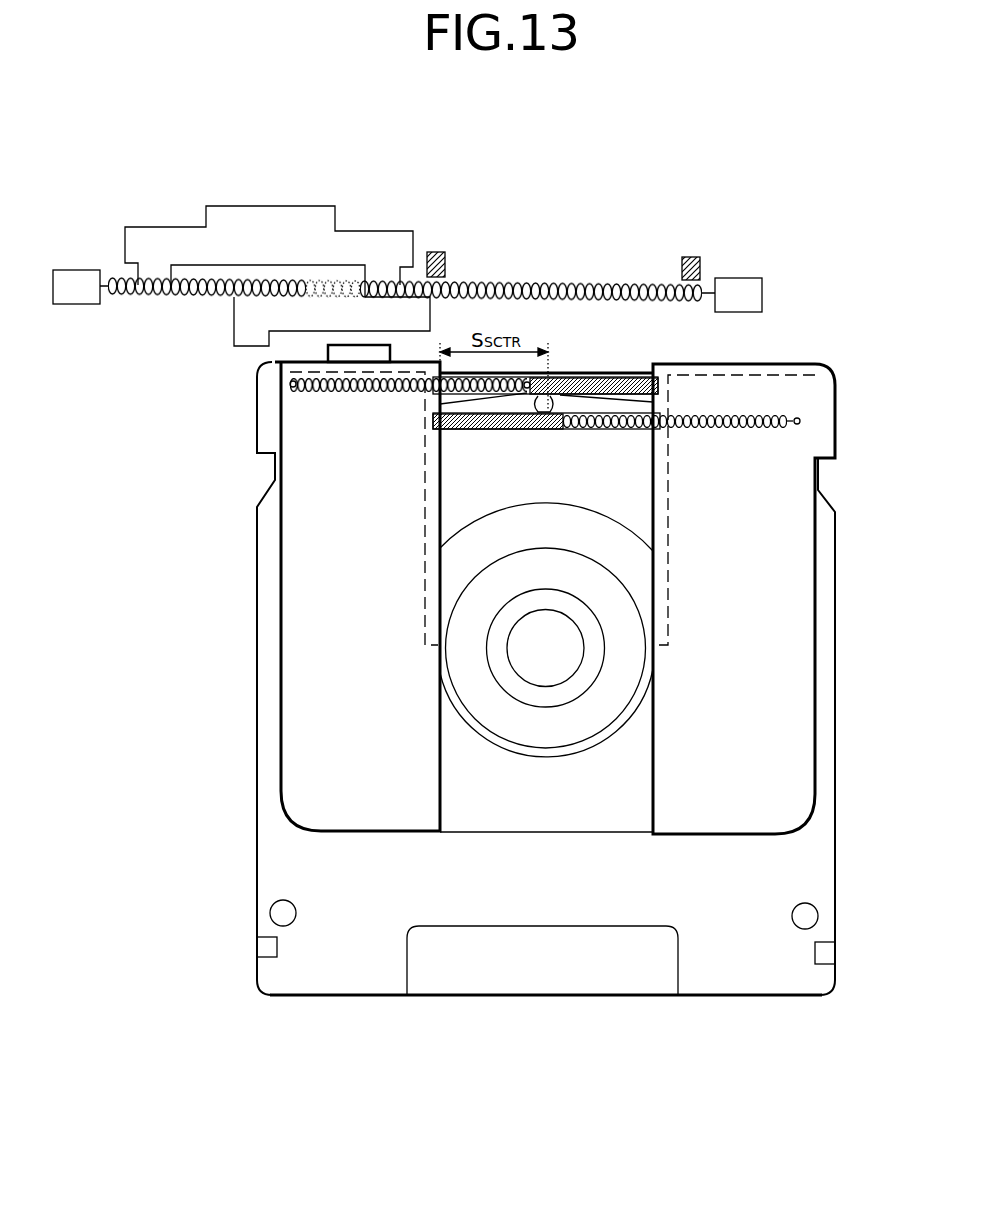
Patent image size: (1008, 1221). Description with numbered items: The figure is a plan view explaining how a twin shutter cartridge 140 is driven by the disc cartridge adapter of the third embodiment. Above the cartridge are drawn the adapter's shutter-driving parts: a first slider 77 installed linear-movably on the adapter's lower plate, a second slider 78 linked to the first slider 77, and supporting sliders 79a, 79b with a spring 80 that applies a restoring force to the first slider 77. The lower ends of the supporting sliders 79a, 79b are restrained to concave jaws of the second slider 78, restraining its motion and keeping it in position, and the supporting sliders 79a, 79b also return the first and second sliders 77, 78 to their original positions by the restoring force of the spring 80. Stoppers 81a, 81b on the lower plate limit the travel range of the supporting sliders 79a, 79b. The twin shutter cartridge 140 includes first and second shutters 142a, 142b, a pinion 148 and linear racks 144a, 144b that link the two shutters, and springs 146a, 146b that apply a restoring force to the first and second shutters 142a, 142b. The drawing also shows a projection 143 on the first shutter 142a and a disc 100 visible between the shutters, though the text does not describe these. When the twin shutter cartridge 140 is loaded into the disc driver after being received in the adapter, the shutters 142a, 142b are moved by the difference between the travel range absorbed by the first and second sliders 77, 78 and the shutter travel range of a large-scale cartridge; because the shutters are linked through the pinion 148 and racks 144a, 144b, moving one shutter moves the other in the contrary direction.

The first slider 77 is at (393, 238).
The second slider 78 is at (328, 300).
The supporting slider 79a is at (72, 270).
The supporting slider 79b is at (750, 278).
The spring 80 is at (498, 293).
The stopper 81a is at (441, 252).
The stopper 81b is at (690, 257).
The disc 100 is at (440, 476).
The twin shutter cartridge 140 is at (836, 361).
The first shutter 142a is at (385, 576).
The second shutter 142b is at (786, 568).
The shutter projection 143 is at (328, 352).
The linear rack 144a is at (610, 378).
The linear rack 144b is at (508, 430).
The spring 146a is at (300, 384).
The spring 146b is at (732, 418).
The pinion 148 is at (553, 412).